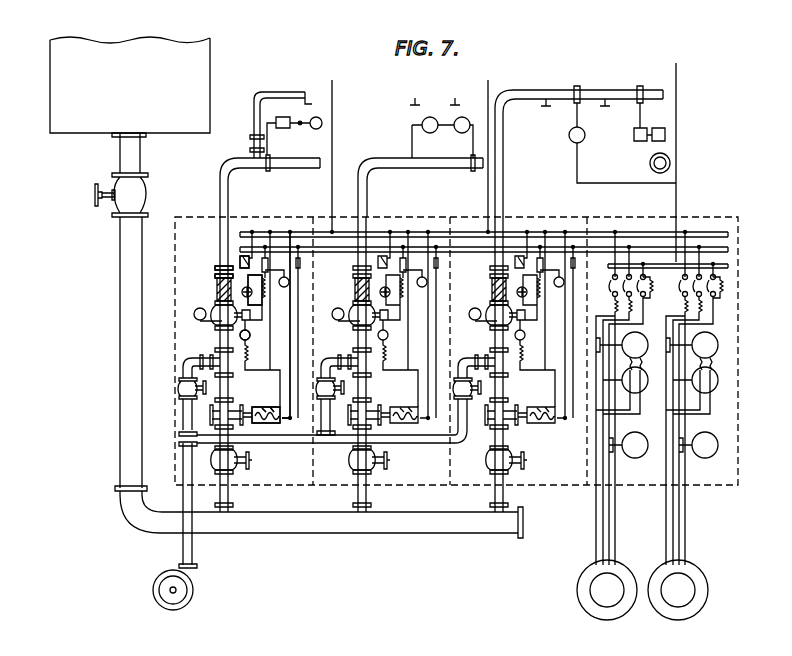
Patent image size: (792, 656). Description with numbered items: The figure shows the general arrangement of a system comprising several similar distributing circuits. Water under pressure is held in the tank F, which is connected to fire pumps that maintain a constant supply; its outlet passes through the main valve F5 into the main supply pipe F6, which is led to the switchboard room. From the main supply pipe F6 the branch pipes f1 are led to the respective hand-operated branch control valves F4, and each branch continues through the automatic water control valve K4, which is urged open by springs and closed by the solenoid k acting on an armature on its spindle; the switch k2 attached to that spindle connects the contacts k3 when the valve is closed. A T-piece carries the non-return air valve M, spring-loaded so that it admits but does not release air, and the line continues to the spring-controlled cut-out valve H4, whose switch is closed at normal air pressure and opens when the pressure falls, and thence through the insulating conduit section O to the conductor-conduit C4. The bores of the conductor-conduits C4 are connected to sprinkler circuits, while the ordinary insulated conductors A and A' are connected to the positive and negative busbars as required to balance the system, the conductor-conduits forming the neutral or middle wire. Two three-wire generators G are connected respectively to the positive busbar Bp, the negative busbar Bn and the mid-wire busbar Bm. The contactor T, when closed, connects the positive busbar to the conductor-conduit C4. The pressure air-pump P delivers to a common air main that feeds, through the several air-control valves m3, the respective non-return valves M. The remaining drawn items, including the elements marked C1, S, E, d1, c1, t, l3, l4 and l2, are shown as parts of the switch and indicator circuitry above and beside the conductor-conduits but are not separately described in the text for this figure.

The source of fluid pressure F is at (130, 85).
The main valve F5 is at (146, 196).
The main supply pipe F6 is at (123, 451).
The pressure air-pump P is at (183, 593).
The conductor-conduit C4 is at (226, 213).
The control pipe C1 is at (258, 127).
The switch S is at (457, 104).
The electric device E is at (317, 117).
The contact d1 is at (282, 128).
The contact c1 is at (301, 126).
The insulated conductor A is at (410, 157).
The insulated conductor A' is at (667, 162).
The positive busbar Bp is at (697, 230).
The mid-wire busbar Bm is at (730, 250).
The negative busbar Bn is at (730, 266).
The contactor T is at (236, 258).
The thermostat contact t is at (238, 261).
The flange l3 is at (218, 279).
The insulating conduit section O is at (217, 295).
The spring-controlled cut-out valve H4 is at (219, 324).
The non-return air valve M is at (203, 357).
The air-control valve m3 is at (181, 390).
The auto control water valve K4 is at (214, 417).
The contacts k3 is at (276, 411).
The solenoid k is at (265, 423).
The switch k2 is at (290, 421).
The hand-operated valve F4 is at (238, 462).
The pipe f1 is at (229, 498).
The relay l4 is at (263, 296).
The relay contact l2 is at (251, 335).
The electric generator G is at (642, 590).